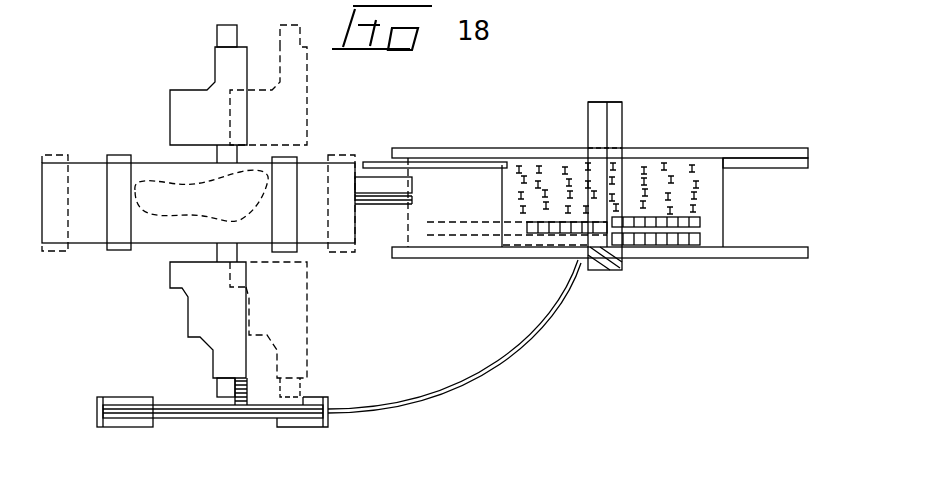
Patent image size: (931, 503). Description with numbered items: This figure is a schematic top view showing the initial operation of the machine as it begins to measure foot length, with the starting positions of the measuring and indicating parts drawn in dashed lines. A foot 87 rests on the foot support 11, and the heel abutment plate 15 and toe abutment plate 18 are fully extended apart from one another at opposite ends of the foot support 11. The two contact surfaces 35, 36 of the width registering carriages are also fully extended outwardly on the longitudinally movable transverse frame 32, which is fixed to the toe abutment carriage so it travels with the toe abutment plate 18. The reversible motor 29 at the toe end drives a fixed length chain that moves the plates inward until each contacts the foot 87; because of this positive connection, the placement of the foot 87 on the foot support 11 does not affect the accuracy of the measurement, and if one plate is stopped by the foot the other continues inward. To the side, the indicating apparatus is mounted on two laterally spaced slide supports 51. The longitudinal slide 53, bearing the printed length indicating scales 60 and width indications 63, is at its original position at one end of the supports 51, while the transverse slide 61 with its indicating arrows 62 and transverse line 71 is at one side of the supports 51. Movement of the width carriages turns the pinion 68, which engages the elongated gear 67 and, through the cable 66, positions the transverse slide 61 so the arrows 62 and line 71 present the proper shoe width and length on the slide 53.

The foot support 11 is at (80, 167).
The heel abutment plate 15 is at (119, 254).
The toe abutment plate 18 is at (285, 243).
The reversible motor 29 is at (400, 185).
The transverse frame 32 is at (228, 152).
The contact surface 35 is at (193, 147).
The contact surface 36 is at (200, 258).
The slide supports 51 is at (506, 150).
The longitudinal slide 53 is at (707, 195).
The length indicating scales 60 is at (706, 240).
The transverse slide 61 is at (615, 115).
The indicating arrows 62 is at (600, 183).
The width indications 63 is at (648, 172).
The cable 66 is at (502, 357).
The elongated gear 67 is at (227, 417).
The pinion 68 is at (247, 397).
The transverse line 71 is at (608, 115).
The foot 87 is at (223, 215).